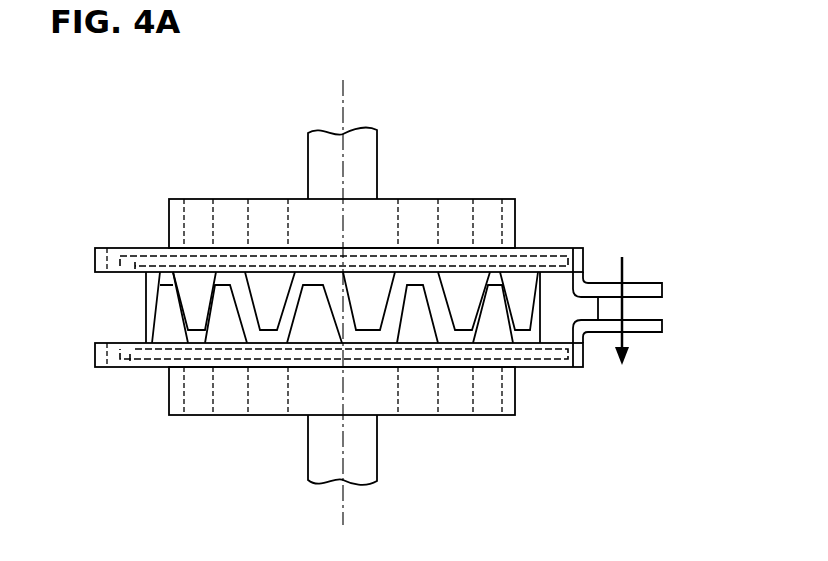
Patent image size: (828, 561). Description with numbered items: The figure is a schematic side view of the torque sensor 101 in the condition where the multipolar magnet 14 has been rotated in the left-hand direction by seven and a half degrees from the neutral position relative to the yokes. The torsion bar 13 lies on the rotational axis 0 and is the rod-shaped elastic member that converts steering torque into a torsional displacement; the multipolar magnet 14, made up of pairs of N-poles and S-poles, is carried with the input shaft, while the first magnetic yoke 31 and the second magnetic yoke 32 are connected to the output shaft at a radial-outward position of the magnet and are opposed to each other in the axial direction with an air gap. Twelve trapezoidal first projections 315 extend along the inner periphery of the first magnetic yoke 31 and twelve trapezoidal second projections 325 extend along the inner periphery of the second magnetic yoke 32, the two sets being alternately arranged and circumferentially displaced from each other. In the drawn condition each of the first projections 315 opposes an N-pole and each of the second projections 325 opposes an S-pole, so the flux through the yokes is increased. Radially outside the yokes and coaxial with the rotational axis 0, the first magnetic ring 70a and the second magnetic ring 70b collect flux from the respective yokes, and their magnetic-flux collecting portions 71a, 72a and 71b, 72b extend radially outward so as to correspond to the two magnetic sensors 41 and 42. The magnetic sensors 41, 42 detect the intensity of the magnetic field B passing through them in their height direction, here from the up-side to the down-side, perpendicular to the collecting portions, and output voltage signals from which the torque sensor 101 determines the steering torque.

The torque sensor 101 is at (155, 116).
The rotational axis 0 is at (343, 512).
The torsion bar 13 is at (363, 152).
The multipolar magnet 14 is at (245, 198).
The first magnetic yoke 31 is at (133, 246).
The second magnetic yoke 32 is at (130, 368).
The first projections 315 is at (193, 300).
The second projections 325 is at (165, 322).
The first magnetic ring 70a is at (563, 246).
The second magnetic ring 70b is at (564, 370).
The first magnetic sensor 41 is at (661, 307).
The second magnetic sensor 42 is at (650, 310).
The magnetic-flux collecting portion 71a is at (660, 272).
The magnetic-flux collecting portion 72a is at (662, 288).
The magnetic-flux collecting portion 71b is at (661, 343).
The magnetic-flux collecting portion 72b is at (662, 327).
The magnetic field B is at (622, 272).